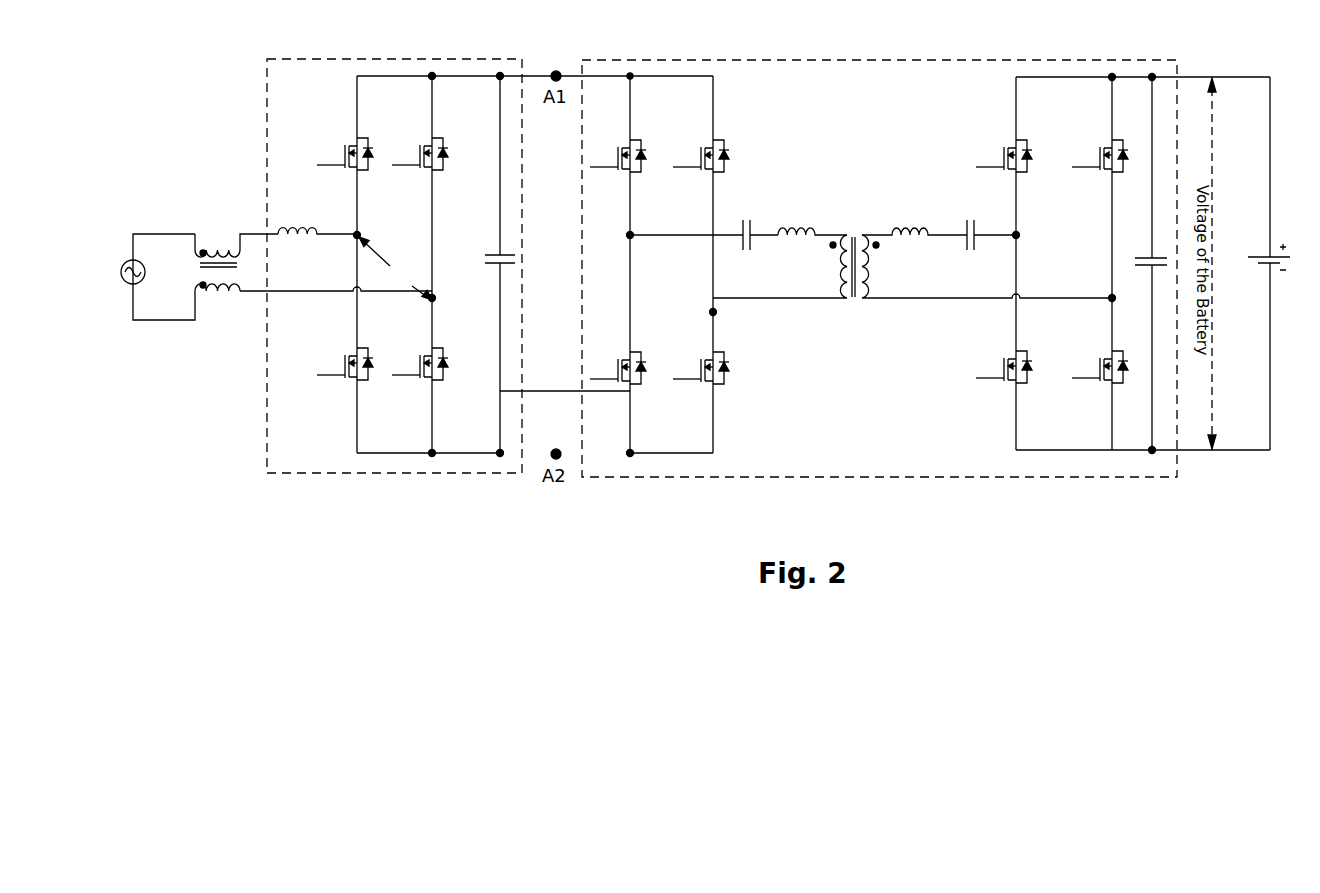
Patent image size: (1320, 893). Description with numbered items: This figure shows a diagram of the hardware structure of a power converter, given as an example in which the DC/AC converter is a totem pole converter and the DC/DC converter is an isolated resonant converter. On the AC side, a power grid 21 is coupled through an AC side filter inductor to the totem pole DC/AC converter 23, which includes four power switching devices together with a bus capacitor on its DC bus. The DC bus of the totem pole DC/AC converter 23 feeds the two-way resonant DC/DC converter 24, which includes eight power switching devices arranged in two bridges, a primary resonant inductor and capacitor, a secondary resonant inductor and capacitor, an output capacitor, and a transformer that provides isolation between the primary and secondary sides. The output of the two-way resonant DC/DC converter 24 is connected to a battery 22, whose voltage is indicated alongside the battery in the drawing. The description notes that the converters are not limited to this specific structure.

The power grid 21 is at (267, 307).
The battery 22 is at (1268, 263).
The totem pole DC/AC converter 23 is at (315, 57).
The two-way resonant DC/DC converter 24 is at (807, 57).